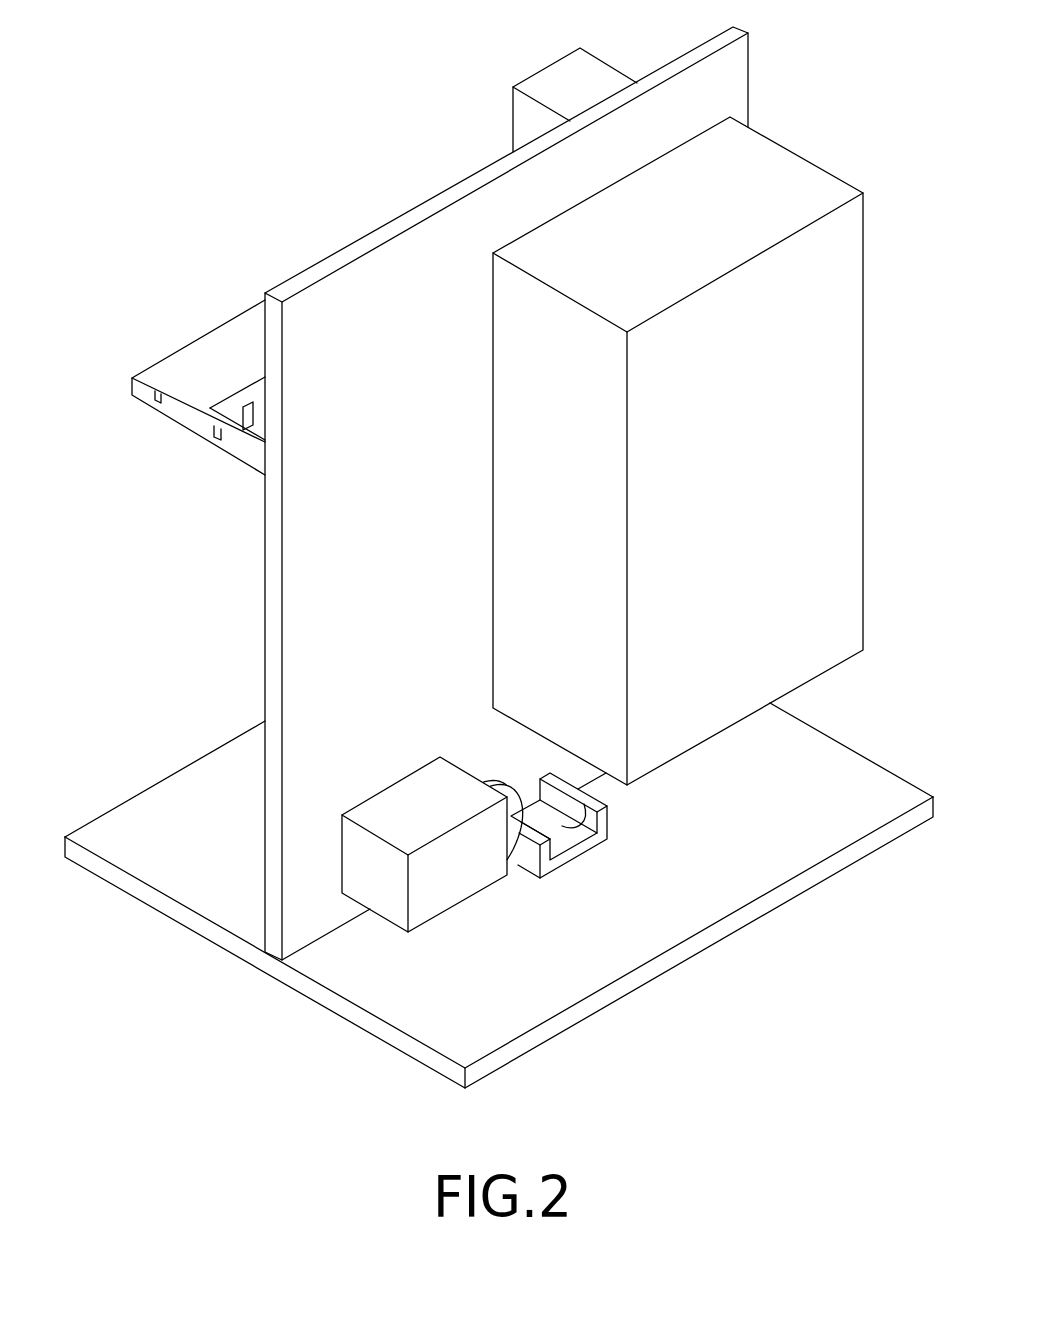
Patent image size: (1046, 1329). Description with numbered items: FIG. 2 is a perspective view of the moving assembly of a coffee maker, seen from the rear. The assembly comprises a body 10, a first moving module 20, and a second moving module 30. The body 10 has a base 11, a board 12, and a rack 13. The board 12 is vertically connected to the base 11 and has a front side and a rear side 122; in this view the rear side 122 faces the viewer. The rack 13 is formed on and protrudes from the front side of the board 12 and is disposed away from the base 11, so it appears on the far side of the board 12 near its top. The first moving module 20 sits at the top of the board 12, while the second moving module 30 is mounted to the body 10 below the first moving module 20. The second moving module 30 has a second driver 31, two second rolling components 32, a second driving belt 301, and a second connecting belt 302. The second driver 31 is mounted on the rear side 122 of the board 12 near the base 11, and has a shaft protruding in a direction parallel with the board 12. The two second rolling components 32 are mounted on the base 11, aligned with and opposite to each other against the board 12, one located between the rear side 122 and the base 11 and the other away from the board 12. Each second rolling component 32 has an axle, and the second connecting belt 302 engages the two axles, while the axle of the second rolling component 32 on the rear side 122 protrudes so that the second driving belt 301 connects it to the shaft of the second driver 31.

The body 10 is at (499, 557).
The base 11 is at (190, 787).
The board 12 is at (458, 493).
The rear side 122 is at (313, 571).
The rack 13 is at (212, 362).
The first moving module 20 is at (542, 62).
The second moving module 30 is at (517, 839).
The second driver 31 is at (452, 914).
The second driving belt 301 is at (513, 863).
The second rolling components 32 is at (607, 842).
The second connecting belt 302 is at (562, 832).